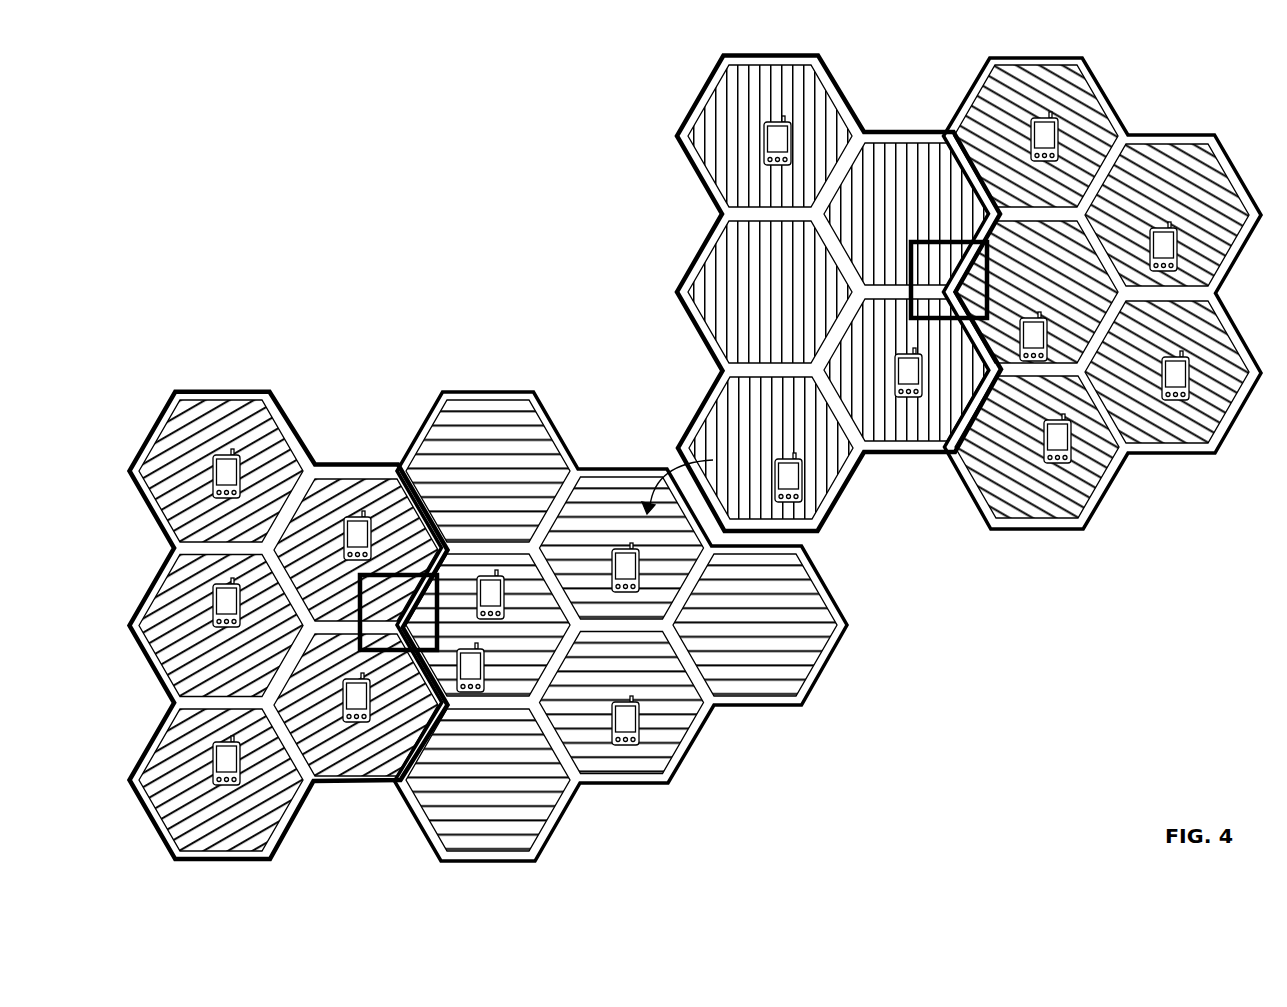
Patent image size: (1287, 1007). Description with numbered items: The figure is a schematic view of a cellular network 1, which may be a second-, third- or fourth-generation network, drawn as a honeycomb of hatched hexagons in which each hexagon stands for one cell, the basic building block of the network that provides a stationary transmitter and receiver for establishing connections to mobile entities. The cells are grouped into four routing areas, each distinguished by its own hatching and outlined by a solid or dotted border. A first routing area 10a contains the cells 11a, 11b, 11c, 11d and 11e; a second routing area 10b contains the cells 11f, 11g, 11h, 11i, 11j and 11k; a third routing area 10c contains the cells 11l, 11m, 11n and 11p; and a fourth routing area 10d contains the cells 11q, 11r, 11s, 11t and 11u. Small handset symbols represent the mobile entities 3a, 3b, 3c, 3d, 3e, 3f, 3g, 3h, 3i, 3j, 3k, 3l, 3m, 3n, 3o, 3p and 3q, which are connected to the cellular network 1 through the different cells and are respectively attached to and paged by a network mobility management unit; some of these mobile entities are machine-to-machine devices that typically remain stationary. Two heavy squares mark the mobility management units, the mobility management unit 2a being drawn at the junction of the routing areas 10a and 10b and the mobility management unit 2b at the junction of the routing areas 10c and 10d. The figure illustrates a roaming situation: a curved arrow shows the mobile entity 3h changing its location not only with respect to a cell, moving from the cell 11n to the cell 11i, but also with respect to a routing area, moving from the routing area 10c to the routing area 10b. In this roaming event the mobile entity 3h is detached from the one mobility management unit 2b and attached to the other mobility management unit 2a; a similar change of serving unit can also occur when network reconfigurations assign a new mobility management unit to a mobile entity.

The cellular network 1 is at (256, 88).
The first routing area 10a is at (257, 390).
The second routing area 10b is at (513, 391).
The routing area 10c is at (805, 54).
The routing area 10d is at (1065, 56).
The cell 11a is at (167, 420).
The cell 11b is at (168, 664).
The cell 11c is at (170, 828).
The cell 11d is at (300, 500).
The cell 11e is at (297, 664).
The cell 11f is at (433, 513).
The cell 11g is at (570, 642).
The cell 11h is at (427, 823).
The cell 11i is at (565, 505).
The cell 11j is at (563, 661).
The cell 11k is at (700, 666).
The cell 11l is at (718, 86).
The cell 11m is at (717, 244).
The cell 11n is at (720, 407).
The cell 11p is at (848, 328).
The cell 11q is at (980, 92).
The cell 11r is at (987, 236).
The cell 11s is at (980, 398).
The cell 11t is at (1115, 174).
The cell 11u is at (1115, 326).
The mobility management unit 2a is at (413, 572).
The mobility management unit 2b is at (932, 240).
The mobile entity 3a is at (241, 471).
The mobile entity 3b is at (241, 599).
The mobile entity 3c is at (241, 757).
The mobile entity 3d is at (344, 533).
The mobile entity 3e is at (371, 697).
The mobile entity 3f is at (505, 590).
The mobile entity 3g is at (485, 664).
The mobile entity 3h is at (640, 564).
The mobile entity 3i is at (640, 718).
The mobile entity 3j is at (792, 133).
The mobile entity 3k is at (775, 473).
The mobile entity 3l is at (923, 365).
The mobile entity 3m is at (1059, 127).
The mobile entity 3n is at (1048, 330).
The mobile entity 3o is at (1072, 430).
The mobile entity 3p is at (1178, 240).
The mobile entity 3q is at (1190, 365).